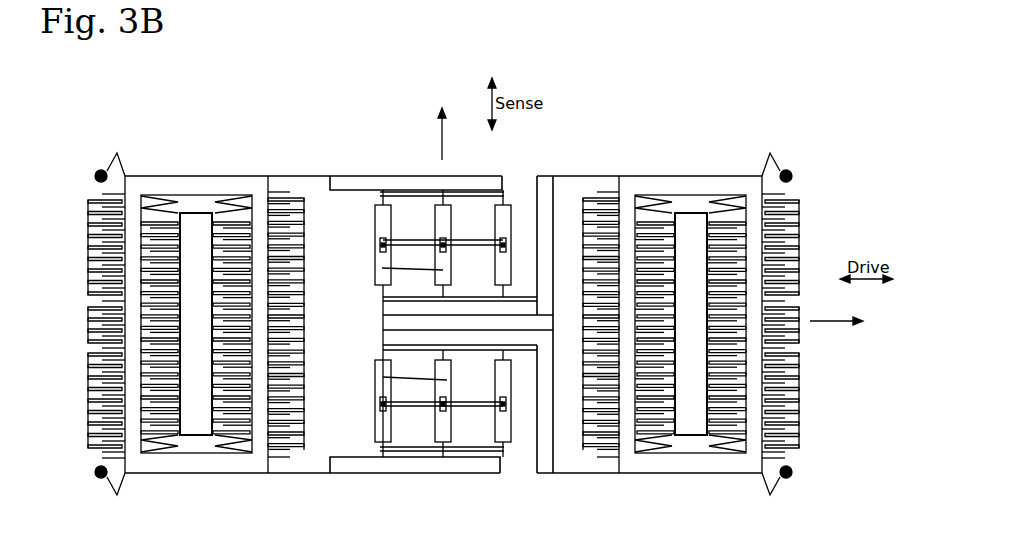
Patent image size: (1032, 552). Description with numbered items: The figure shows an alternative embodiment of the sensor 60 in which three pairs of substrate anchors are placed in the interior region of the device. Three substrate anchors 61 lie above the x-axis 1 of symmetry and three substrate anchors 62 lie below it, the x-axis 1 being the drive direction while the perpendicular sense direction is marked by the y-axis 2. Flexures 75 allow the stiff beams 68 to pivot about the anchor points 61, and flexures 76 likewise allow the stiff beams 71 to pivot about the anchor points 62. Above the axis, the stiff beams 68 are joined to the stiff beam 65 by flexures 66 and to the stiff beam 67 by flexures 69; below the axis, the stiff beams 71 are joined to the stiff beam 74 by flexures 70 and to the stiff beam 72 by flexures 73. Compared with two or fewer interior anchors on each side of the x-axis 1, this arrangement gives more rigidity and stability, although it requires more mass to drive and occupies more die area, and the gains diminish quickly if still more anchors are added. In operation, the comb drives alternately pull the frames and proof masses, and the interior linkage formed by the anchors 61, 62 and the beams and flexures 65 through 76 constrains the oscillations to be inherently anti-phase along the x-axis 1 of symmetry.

The sensor 60 is at (125, 122).
The substrate anchors 61 is at (506, 242).
The substrate anchors 62 is at (506, 405).
The stiff beam 65 is at (400, 183).
The flexures 66 is at (392, 193).
The stiff beam 67 is at (546, 240).
The stiff beams 68 is at (507, 266).
The flexures 69 is at (506, 299).
The flexures 70 is at (506, 347).
The stiff beams 71 is at (506, 380).
The stiff beam 72 is at (393, 463).
The flexures 73 is at (392, 450).
The stiff beam 74 is at (547, 405).
The flexures 75 is at (380, 248).
The flexures 76 is at (380, 403).
The x-axis of symmetry 1 is at (825, 321).
The y axis (sense direction) 2 is at (441, 138).